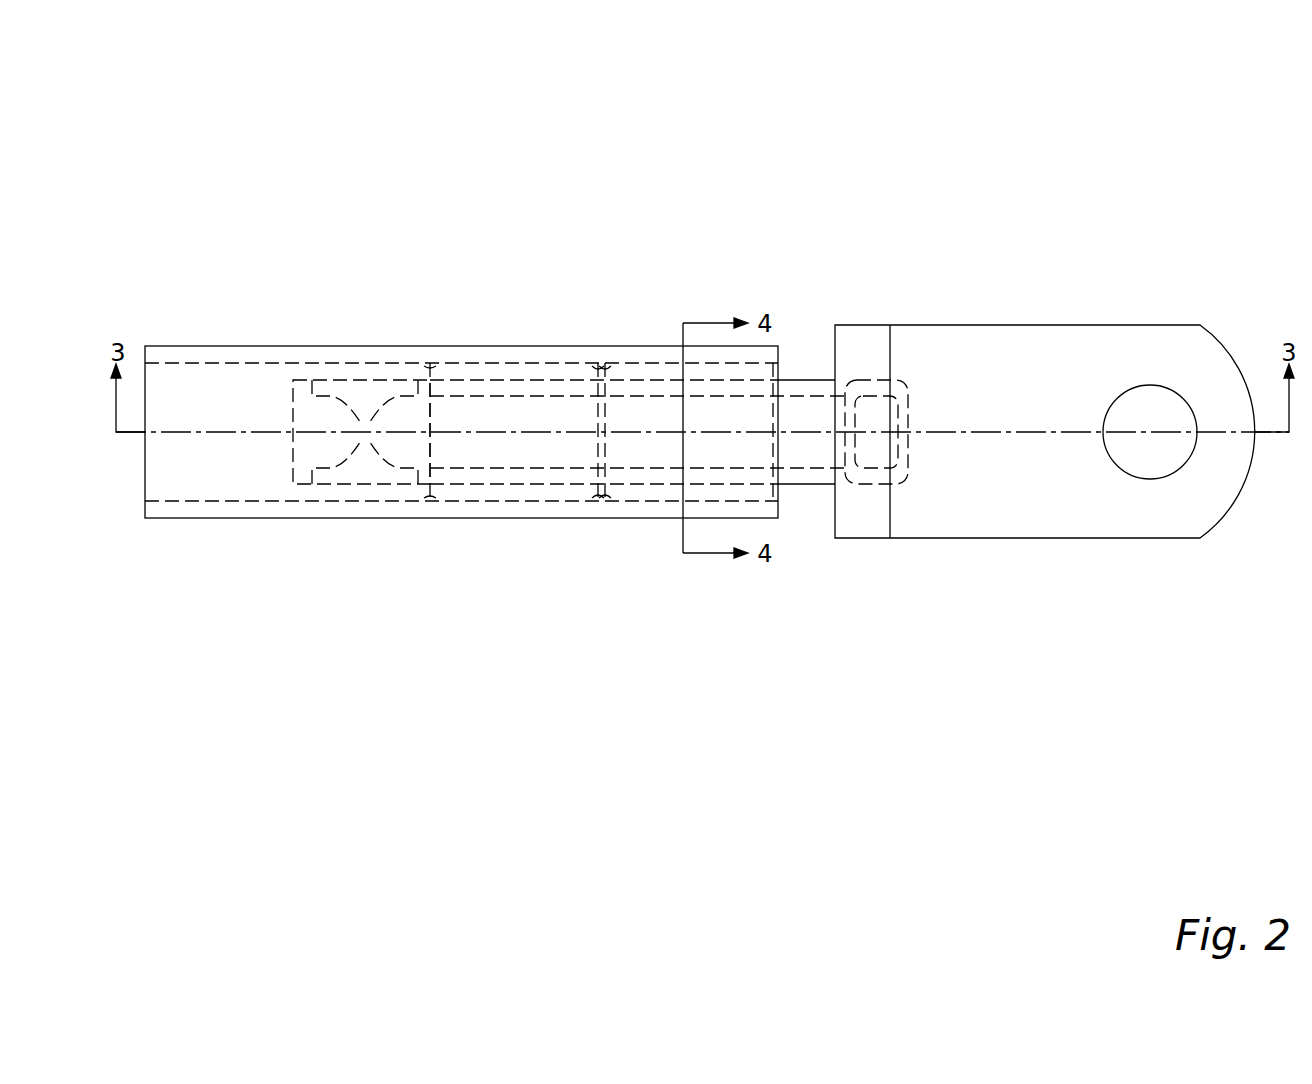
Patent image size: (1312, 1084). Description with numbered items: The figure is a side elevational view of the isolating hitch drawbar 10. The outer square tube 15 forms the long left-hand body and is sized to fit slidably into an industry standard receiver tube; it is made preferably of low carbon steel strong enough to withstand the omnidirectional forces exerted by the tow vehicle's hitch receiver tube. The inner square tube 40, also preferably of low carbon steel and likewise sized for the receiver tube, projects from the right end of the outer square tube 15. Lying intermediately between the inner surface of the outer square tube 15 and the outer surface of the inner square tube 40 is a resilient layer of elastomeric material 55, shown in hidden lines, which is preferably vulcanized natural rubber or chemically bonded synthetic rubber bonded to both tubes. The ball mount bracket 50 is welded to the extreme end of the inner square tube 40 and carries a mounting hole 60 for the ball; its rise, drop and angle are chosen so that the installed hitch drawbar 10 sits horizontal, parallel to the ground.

The hitch drawbar 10 is at (198, 140).
The outer square tube 15 is at (510, 340).
The inner square tube 40 is at (797, 378).
The ball mount bracket 50 is at (930, 355).
The resilient layer of elastomeric material 55 is at (515, 491).
The mounting hole 60 is at (1142, 384).